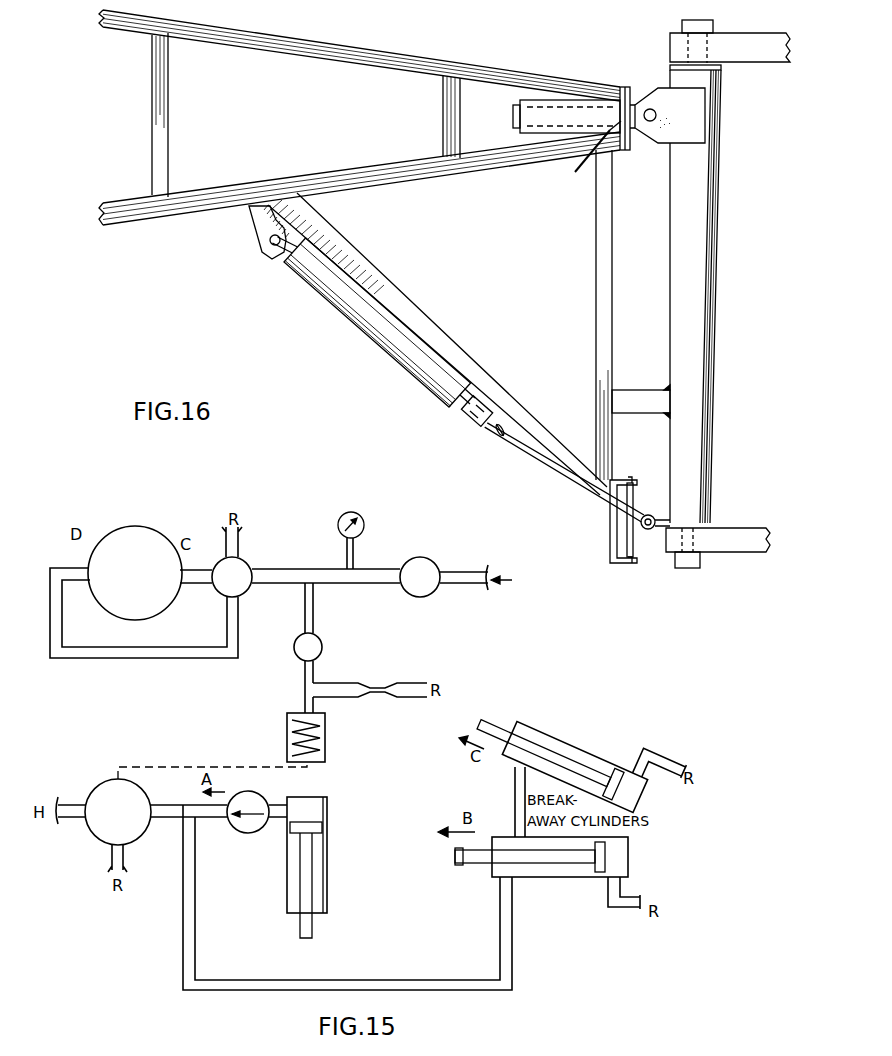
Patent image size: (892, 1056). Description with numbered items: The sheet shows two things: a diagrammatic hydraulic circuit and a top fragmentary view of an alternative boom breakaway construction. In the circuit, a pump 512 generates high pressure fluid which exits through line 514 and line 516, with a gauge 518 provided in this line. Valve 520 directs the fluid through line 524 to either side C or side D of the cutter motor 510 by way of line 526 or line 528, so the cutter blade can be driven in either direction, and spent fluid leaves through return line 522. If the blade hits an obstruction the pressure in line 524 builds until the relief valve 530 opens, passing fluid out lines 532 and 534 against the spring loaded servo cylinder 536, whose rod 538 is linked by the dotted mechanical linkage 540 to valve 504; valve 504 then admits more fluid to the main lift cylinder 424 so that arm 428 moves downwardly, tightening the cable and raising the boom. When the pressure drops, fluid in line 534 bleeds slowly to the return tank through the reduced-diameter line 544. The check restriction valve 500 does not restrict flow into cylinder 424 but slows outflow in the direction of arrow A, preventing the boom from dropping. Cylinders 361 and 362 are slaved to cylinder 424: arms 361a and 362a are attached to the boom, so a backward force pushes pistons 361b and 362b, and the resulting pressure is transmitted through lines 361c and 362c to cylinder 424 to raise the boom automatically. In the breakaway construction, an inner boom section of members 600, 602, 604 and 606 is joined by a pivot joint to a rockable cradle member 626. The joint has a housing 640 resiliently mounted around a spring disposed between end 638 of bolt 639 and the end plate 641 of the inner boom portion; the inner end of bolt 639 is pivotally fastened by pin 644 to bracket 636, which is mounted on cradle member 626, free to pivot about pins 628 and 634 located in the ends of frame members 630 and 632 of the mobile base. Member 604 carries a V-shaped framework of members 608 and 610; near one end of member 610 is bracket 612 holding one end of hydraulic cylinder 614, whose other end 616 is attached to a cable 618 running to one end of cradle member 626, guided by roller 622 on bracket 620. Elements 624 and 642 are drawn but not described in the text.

In FIG. 16, the inner boom section member 600 is at (268, 43).
In FIG. 16, the inner boom section member 602 is at (170, 122).
In FIG. 16, the inner boom section member 604 is at (328, 186).
In FIG. 16, the inner boom section member 606 is at (442, 108).
In FIG. 16, the V-shaped framework member 608 is at (597, 267).
In FIG. 16, the V-shaped framework member 610 is at (390, 296).
In FIG. 16, the bracket 612 is at (257, 227).
In FIG. 16, the hydraulic cylinder 614 is at (347, 318).
In FIG. 16, the other end of cylinder 616 is at (470, 424).
In FIG. 16, the cable 618 is at (545, 463).
In FIG. 16, the bracket 620 is at (609, 530).
In FIG. 16, the roller 622 is at (636, 495).
In FIG. 16, the cross member 624 is at (640, 398).
In FIG. 16, the rockable cradle member 626 is at (683, 320).
In FIG. 16, the pin 628 is at (713, 26).
In FIG. 16, the frame member 630 is at (757, 52).
In FIG. 16, the frame member 632 is at (747, 532).
In FIG. 16, the pin 634 is at (702, 563).
In FIG. 16, the bracket 636 is at (688, 128).
In FIG. 16, the end of bolt 638 is at (513, 117).
In FIG. 16, the bolt 639 is at (631, 130).
In FIG. 16, the housing 640 is at (532, 100).
In FIG. 16, the end plate 641 is at (575, 172).
In FIG. 16, the end plate 642 is at (626, 100).
In FIG. 16, the pin 644 is at (650, 109).
In FIG. 15, the cutter motor 510 is at (148, 608).
In FIG. 15, the pump 512 is at (427, 597).
In FIG. 15, the line 514 is at (373, 585).
In FIG. 15, the line 516 is at (327, 568).
In FIG. 15, the gauge 518 is at (347, 512).
In FIG. 15, the valve 520 is at (248, 560).
In FIG. 15, the return line 522 is at (222, 545).
In FIG. 15, the line 524 is at (282, 579).
In FIG. 15, the line 526 is at (210, 652).
In FIG. 15, the line 528 is at (197, 578).
In FIG. 15, the relief valve 530 is at (320, 640).
In FIG. 15, the line 532 is at (302, 608).
In FIG. 15, the line 534 is at (303, 672).
In FIG. 15, the spring loaded servo cylinder 536 is at (287, 740).
In FIG. 15, the rod 538 is at (310, 753).
In FIG. 15, the mechanical linkage 540 is at (197, 765).
In FIG. 15, the line 544 is at (345, 698).
In FIG. 15, the check restriction valve 500 is at (247, 833).
In FIG. 15, the valve 504 is at (133, 843).
In FIG. 15, the main lift cylinder 424 is at (330, 867).
In FIG. 15, the arm 428 is at (315, 935).
In FIG. 15, the cylinder 361 is at (547, 880).
In FIG. 15, the arm 361a is at (470, 853).
In FIG. 15, the piston 361b is at (607, 855).
In FIG. 15, the line 361c is at (360, 982).
In FIG. 15, the cylinder 362 is at (558, 740).
In FIG. 15, the arm 362a is at (493, 722).
In FIG. 15, the piston 362b is at (617, 772).
In FIG. 15, the line 362c is at (515, 799).